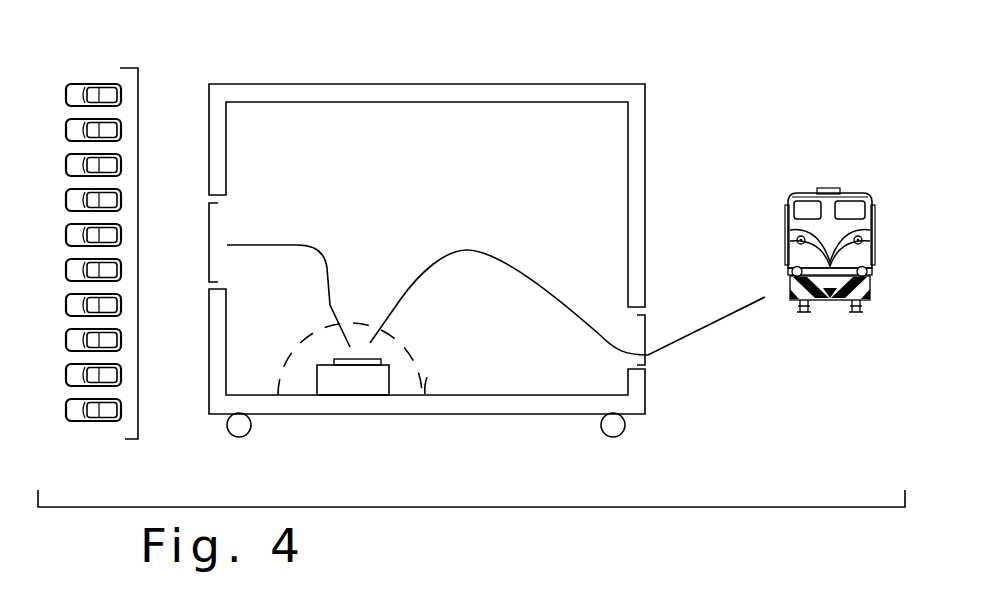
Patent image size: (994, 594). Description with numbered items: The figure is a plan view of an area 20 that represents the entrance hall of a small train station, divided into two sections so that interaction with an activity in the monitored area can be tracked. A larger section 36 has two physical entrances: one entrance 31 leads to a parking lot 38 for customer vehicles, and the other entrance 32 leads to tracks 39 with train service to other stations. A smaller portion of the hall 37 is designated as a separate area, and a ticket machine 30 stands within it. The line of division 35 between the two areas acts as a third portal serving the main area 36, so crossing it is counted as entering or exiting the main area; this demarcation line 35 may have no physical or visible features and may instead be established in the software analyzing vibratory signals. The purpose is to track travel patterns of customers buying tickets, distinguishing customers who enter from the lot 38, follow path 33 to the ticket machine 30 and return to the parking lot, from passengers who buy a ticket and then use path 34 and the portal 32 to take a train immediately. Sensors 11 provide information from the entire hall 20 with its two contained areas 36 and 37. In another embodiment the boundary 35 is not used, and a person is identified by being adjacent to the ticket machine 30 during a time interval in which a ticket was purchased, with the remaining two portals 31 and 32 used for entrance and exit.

The sensors 11 is at (230, 436).
The area 20 is at (645, 180).
The ticket machine 30 is at (393, 382).
The entrance 31 is at (207, 228).
The entrance 32 is at (645, 338).
The path 33 is at (323, 260).
The path 34 is at (525, 277).
The line of division 35 is at (425, 378).
The larger section 36 is at (393, 148).
The smaller portion of the hall 37 is at (297, 377).
The parking lot 38 is at (139, 153).
The tracks 39 is at (812, 192).